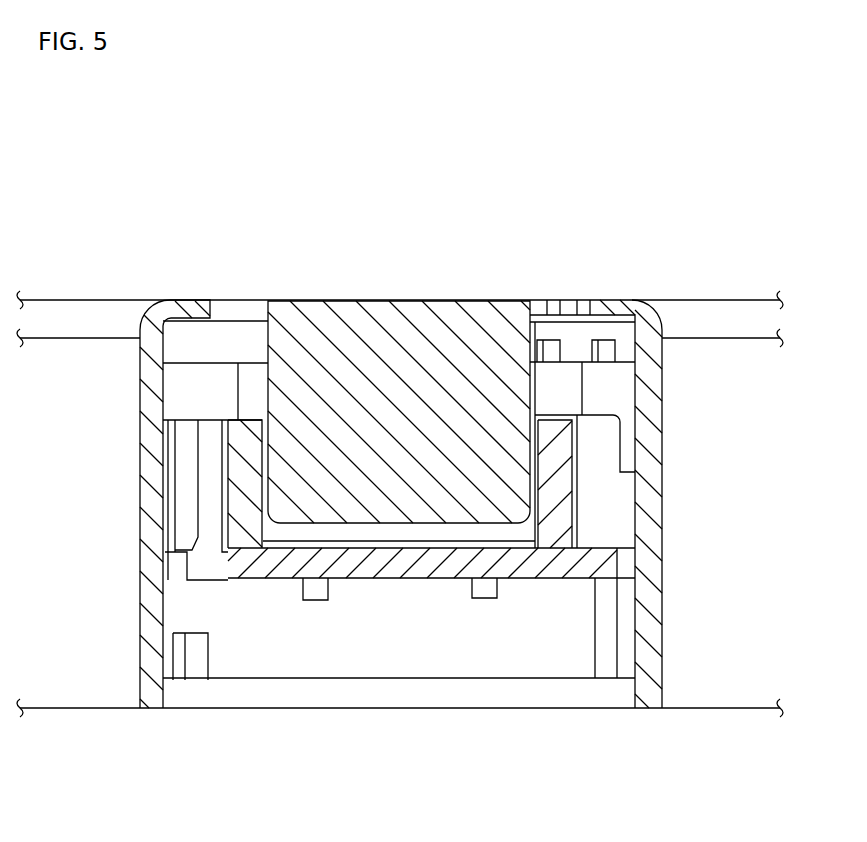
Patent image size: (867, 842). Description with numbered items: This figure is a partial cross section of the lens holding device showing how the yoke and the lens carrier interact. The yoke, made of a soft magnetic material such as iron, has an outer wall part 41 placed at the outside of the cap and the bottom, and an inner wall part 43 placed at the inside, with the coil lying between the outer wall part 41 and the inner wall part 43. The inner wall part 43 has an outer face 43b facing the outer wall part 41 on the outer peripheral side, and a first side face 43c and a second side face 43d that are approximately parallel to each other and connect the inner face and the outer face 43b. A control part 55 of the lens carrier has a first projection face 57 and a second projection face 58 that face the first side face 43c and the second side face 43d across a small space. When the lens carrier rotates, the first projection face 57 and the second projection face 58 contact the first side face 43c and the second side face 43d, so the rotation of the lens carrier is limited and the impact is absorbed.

The outer wall part 41 is at (662, 424).
The inner wall part 43 is at (425, 327).
The outer face 43b is at (393, 527).
The first side face 43c is at (535, 320).
The second side face 43d is at (268, 392).
The control part 55 is at (278, 590).
The first projection face 57 is at (537, 463).
The second projection face 58 is at (262, 455).